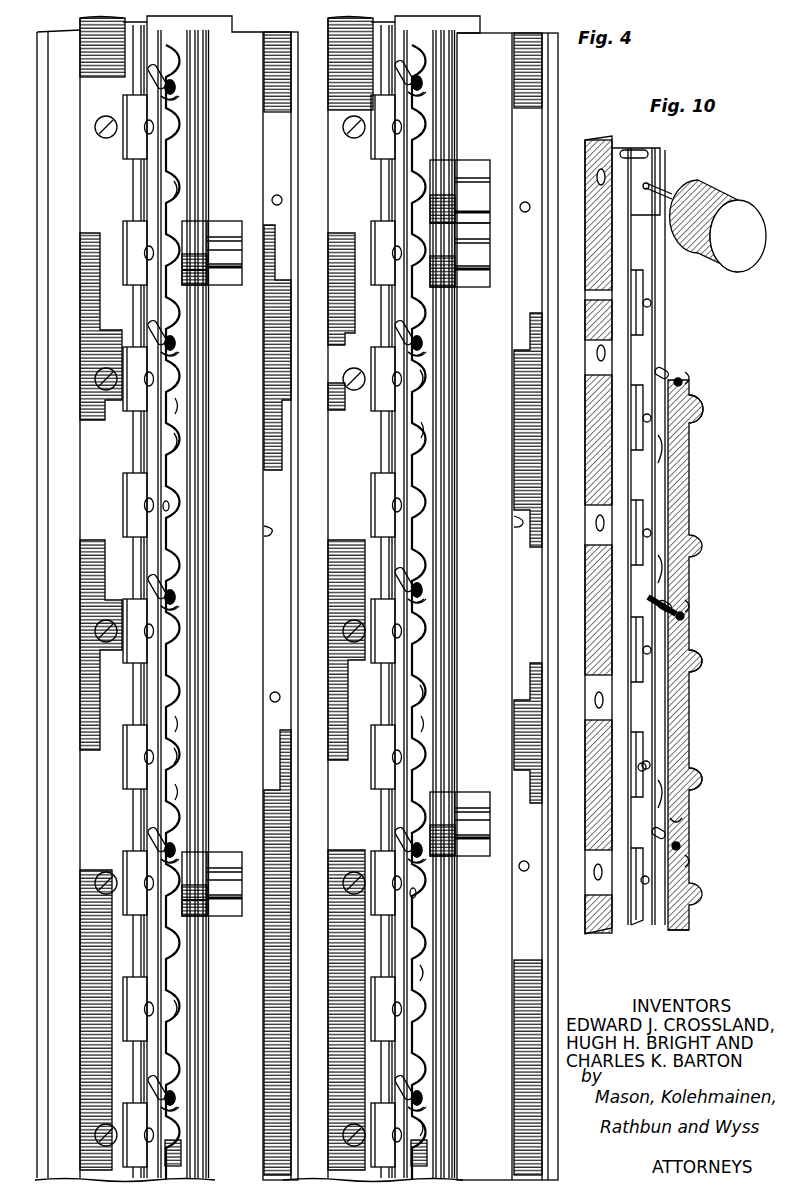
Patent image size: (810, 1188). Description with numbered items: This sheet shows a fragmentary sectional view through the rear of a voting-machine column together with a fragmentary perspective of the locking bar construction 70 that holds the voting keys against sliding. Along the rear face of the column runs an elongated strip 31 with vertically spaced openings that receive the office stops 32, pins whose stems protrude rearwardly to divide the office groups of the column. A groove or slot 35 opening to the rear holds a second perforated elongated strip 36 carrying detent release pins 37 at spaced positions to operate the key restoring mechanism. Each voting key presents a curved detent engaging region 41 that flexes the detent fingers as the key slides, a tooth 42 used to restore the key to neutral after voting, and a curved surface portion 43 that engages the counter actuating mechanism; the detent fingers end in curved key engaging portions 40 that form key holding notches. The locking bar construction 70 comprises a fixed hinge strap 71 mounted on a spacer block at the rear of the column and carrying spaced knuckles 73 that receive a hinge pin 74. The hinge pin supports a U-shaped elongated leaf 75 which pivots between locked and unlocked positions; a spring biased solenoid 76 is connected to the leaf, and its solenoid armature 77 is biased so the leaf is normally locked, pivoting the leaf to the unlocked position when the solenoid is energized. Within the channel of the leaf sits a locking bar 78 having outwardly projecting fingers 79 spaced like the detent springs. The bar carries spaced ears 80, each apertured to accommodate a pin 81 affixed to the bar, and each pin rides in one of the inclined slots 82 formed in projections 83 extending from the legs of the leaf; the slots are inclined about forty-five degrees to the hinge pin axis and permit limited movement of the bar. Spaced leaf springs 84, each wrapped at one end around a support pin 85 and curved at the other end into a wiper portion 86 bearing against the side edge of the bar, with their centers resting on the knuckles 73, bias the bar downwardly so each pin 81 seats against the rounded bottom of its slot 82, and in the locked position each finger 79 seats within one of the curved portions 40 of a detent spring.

In FIG. 4, the elongated strip 31 is at (190, 686).
In FIG. 4, the office stops 32 is at (180, 152).
In FIG. 4, the groove or slot 35 is at (264, 529).
In FIG. 4, the perforated elongated strip 36 is at (266, 36).
In FIG. 4, the detent release pins 37 is at (278, 196).
In FIG. 4, the key engaging portion 40 is at (172, 190).
In FIG. 4, the detent engaging region 41 is at (196, 268).
In FIG. 4, the tooth 42 is at (238, 265).
In FIG. 4, the curved surface portion 43 is at (196, 228).
In FIG. 4, the locking bar construction 70 is at (76, 19).
In FIG. 10, the locking bar construction 70 is at (623, 131).
In FIG. 4, the hinge strap 71 is at (80, 505).
In FIG. 10, the hinge strap 71 is at (600, 260).
In FIG. 4, the knuckles 73 is at (135, 90).
In FIG. 10, the knuckles 73 is at (643, 195).
In FIG. 10, the hinge pin 74 is at (636, 155).
In FIG. 4, the U-shaped elongated leaf 75 is at (178, 1152).
In FIG. 10, the spring biased solenoid 76 is at (716, 200).
In FIG. 10, the solenoid armature 77 is at (681, 205).
In FIG. 4, the locking bar 78 is at (170, 506).
In FIG. 10, the locking bar 78 is at (678, 928).
In FIG. 4, the fingers 79 is at (179, 406).
In FIG. 10, the fingers 79 is at (698, 434).
In FIG. 10, the ears 80 is at (655, 610).
In FIG. 4, the pin 81 is at (172, 88).
In FIG. 10, the pin 81 is at (680, 380).
In FIG. 4, the inclined slots 82 is at (170, 72).
In FIG. 10, the inclined slots 82 is at (662, 370).
In FIG. 4, the projections 83 is at (172, 104).
In FIG. 10, the projections 83 is at (693, 374).
In FIG. 10, the leaf springs 84 is at (675, 822).
In FIG. 4, the support pin 85 is at (146, 385).
In FIG. 10, the support pin 85 is at (642, 770).
In FIG. 10, the wiper portion 86 is at (699, 440).